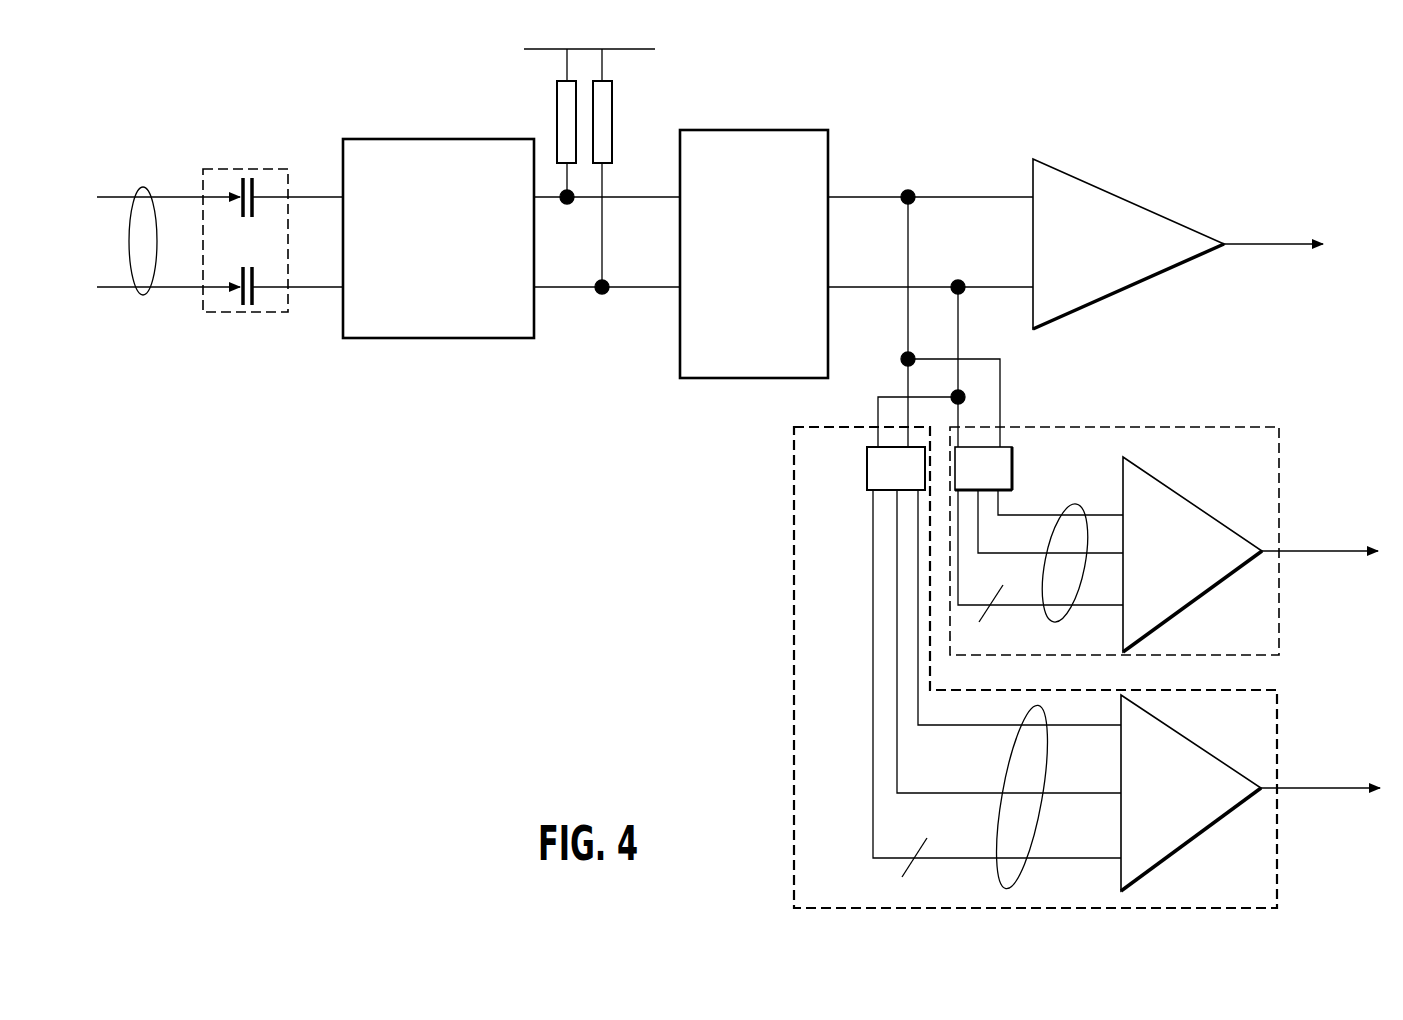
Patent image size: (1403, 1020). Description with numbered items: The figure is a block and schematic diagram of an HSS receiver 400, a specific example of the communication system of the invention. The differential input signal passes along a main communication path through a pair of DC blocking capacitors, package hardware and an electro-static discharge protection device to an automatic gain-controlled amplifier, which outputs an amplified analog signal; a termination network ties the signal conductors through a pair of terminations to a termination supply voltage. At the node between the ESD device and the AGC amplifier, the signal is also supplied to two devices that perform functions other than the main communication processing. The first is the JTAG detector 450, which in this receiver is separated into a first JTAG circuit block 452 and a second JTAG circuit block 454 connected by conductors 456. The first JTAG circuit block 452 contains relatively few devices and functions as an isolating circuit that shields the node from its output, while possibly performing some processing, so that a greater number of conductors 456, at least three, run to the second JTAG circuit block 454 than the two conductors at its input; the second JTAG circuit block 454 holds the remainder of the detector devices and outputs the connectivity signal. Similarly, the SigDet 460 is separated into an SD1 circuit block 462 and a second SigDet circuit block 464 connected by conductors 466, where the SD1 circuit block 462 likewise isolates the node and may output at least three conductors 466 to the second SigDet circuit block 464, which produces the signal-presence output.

The HSS receiver 400 is at (465, 530).
The JTAG detector 450 is at (1137, 427).
The JTAG-1 circuit block 452 is at (1012, 460).
The JTAG-2 circuit block 454 is at (1160, 485).
The conductors 456 is at (1077, 503).
The SigDet 460 is at (794, 857).
The SD1 circuit block 462 is at (867, 470).
The SigDet2 circuit block 464 is at (1155, 852).
The conductors 466 is at (1000, 707).